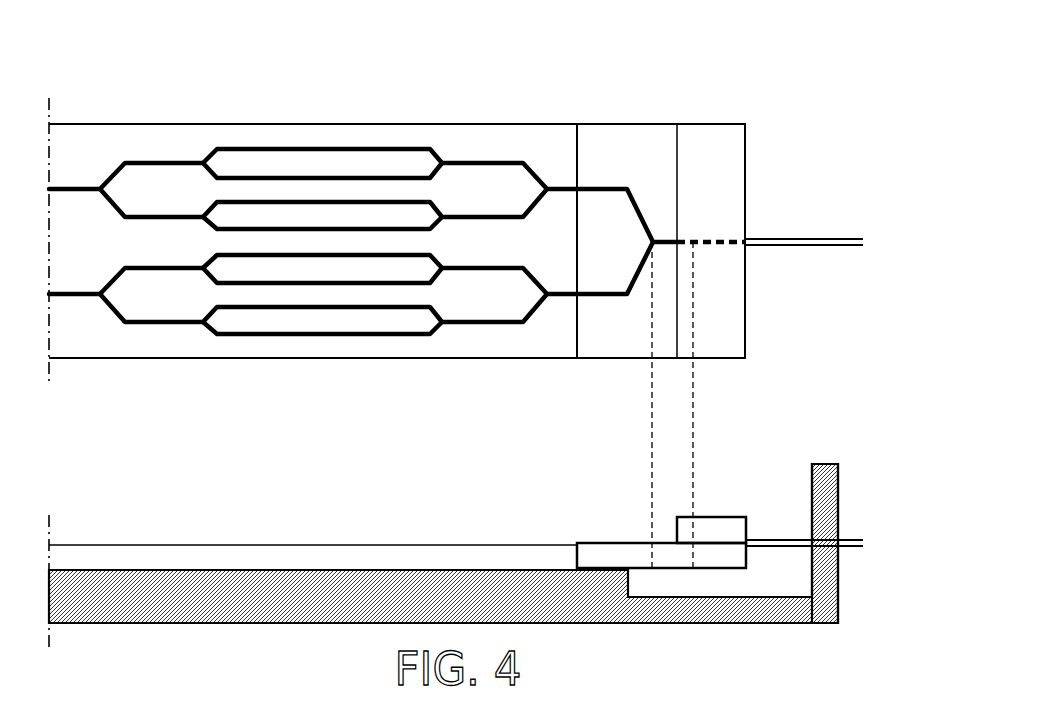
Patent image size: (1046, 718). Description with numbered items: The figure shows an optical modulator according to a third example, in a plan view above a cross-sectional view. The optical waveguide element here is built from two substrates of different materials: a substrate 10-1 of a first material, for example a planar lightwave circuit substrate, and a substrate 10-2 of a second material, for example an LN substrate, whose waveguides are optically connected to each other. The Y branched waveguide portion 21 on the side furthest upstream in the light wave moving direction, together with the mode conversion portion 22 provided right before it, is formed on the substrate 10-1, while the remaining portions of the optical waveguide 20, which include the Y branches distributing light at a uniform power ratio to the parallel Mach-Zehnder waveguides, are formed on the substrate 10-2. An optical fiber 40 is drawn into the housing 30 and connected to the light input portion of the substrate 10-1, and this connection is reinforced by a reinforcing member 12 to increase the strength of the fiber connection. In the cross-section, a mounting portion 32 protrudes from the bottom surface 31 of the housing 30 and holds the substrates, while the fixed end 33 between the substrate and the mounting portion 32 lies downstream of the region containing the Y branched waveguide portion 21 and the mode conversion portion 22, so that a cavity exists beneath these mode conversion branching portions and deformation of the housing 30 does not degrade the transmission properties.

The substrate of a first material 10-1 is at (650, 122).
The substrate of a second material 10-2 is at (450, 122).
The reinforcing member 12 is at (708, 140).
The optical waveguide 20 is at (592, 178).
The Y branched waveguide portion 21 is at (655, 230).
The mode conversion portion 22 is at (672, 252).
The housing 30 is at (838, 485).
The bottom surface 31 is at (775, 588).
The mounting portion 32 is at (343, 568).
The fixed end 33 is at (625, 562).
The optical fiber 40 is at (782, 237).